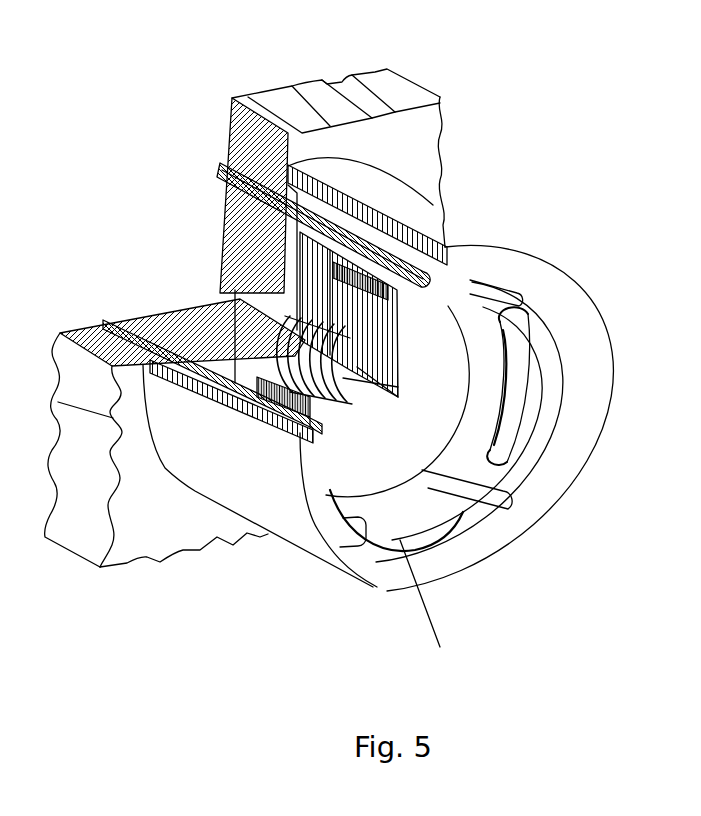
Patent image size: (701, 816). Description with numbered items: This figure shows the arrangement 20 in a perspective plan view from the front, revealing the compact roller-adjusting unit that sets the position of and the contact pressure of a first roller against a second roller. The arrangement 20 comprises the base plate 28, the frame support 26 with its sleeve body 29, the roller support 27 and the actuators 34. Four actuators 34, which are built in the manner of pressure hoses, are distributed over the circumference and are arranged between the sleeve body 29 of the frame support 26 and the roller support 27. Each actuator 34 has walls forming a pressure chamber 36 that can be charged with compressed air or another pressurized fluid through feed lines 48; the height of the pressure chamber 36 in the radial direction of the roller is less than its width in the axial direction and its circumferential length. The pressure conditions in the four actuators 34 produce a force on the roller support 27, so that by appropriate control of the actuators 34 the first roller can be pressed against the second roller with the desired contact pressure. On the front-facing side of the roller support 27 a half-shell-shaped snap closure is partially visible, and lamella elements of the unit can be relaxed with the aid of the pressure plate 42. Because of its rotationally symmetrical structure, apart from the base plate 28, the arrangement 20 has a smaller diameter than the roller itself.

The arrangement 20 is at (543, 110).
The frame support 26 is at (450, 218).
The roller support 27 is at (312, 256).
The base plate 28 is at (303, 93).
The sleeve body 29 is at (468, 235).
The actuator 34 is at (530, 372).
The pressure chamber 36 is at (428, 213).
The pressure plate 42 is at (393, 457).
The feed line 48 is at (228, 165).